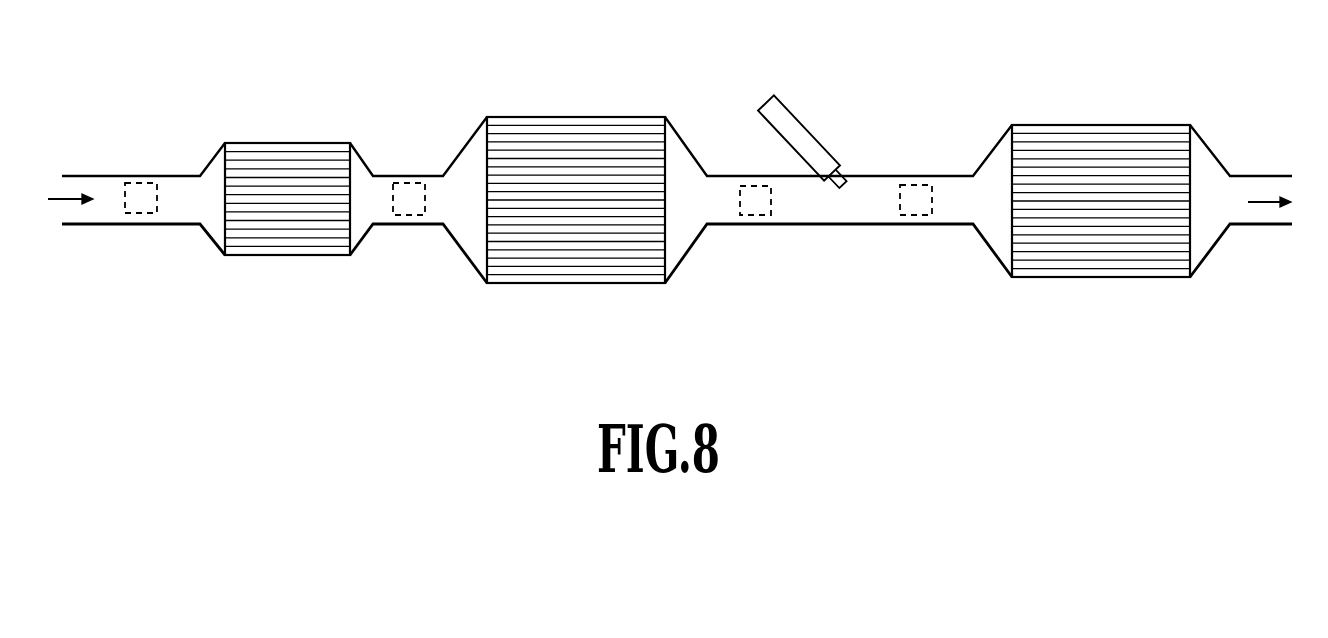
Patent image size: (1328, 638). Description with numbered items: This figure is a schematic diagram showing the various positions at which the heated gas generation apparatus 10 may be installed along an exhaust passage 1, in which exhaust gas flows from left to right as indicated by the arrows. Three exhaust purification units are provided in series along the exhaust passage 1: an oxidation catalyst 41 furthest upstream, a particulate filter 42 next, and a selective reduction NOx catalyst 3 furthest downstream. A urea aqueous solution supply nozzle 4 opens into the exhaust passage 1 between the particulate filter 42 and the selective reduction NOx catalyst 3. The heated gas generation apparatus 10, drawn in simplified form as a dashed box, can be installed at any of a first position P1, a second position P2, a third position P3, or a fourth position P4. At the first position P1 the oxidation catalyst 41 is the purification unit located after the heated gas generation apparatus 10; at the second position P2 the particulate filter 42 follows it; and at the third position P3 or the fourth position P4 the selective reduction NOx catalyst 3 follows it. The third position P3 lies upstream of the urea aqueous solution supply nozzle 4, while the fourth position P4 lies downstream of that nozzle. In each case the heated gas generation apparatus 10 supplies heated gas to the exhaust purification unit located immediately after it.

The exhaust passage 1 is at (825, 210).
The selective reduction NOx catalyst 3 is at (1062, 263).
The urea aqueous solution supply nozzle 4 is at (795, 121).
The heated gas generation apparatus 10 is at (158, 190).
The oxidation catalyst 41 is at (273, 233).
The particulate filter 42 is at (575, 262).
The first position P1 is at (135, 172).
The second position P2 is at (412, 178).
The third position P3 is at (753, 183).
The fourth position P4 is at (917, 177).